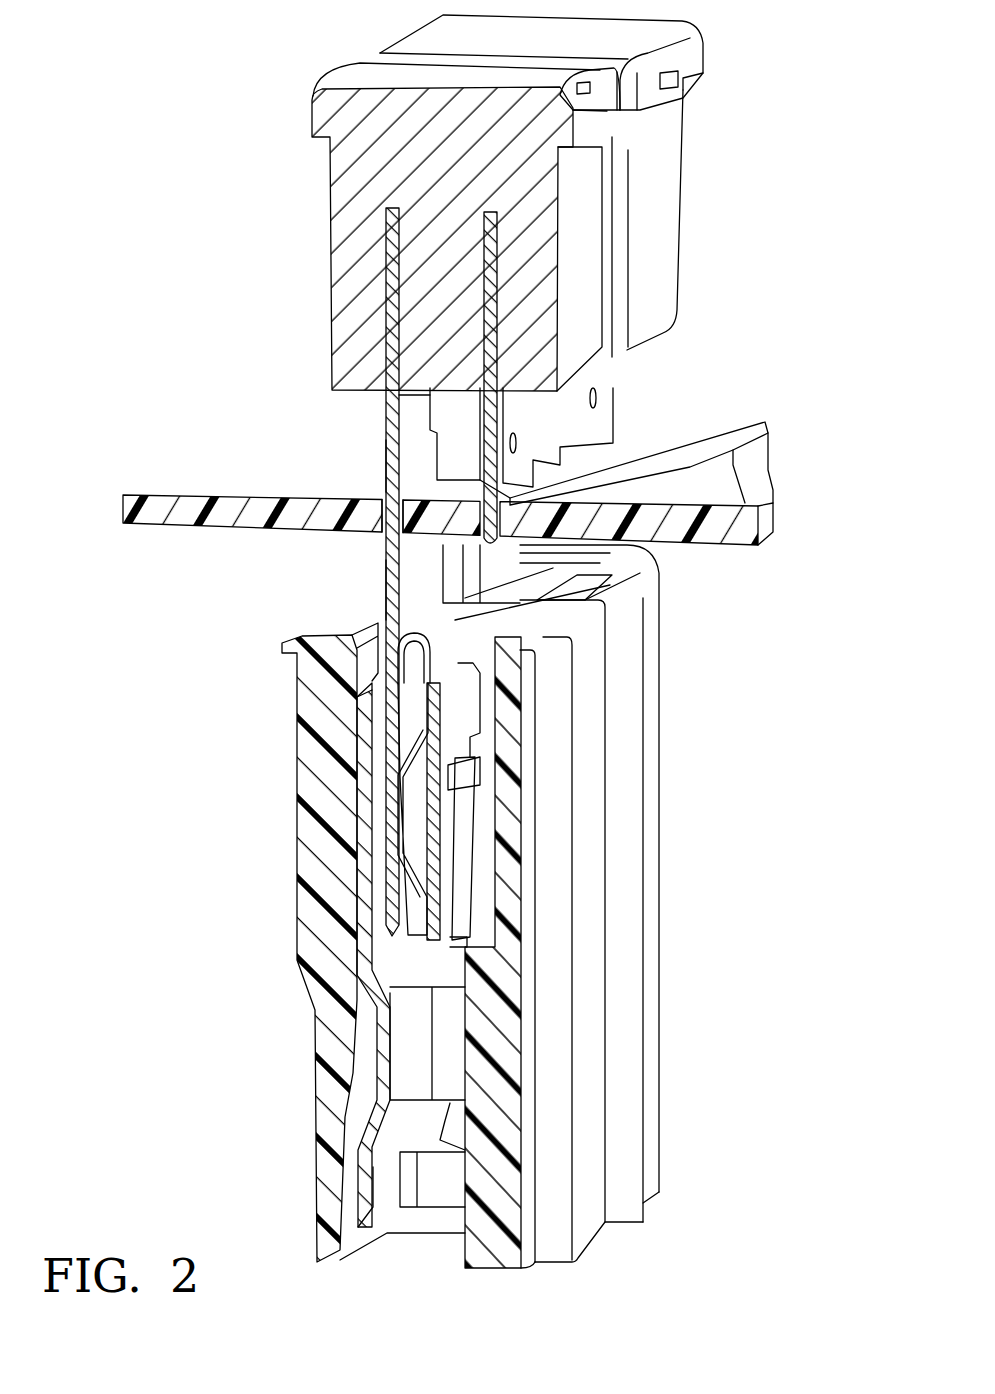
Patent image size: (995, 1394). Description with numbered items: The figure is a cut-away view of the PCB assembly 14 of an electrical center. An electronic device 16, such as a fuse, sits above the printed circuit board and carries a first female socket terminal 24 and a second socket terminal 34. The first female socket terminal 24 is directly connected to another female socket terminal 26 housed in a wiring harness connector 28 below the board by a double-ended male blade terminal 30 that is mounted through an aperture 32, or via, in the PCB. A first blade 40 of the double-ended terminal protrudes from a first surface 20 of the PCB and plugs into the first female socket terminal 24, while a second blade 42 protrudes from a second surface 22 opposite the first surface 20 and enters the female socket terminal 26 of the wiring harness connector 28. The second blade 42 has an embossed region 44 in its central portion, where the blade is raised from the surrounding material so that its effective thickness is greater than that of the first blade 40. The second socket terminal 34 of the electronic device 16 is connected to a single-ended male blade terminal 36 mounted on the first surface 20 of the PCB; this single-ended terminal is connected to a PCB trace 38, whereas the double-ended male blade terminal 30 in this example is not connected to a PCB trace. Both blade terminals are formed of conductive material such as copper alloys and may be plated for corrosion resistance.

The PCB assembly 14 is at (737, 535).
The electronic device 16 is at (362, 75).
The first surface 20 is at (745, 490).
The second surface 22 is at (686, 547).
The first female socket terminal 24 is at (390, 293).
The female socket terminal 26 is at (448, 720).
The wiring harness connector 28 is at (315, 1006).
The double-ended male blade terminal 30 is at (388, 467).
The aperture 32 is at (388, 517).
The second socket terminal 34 is at (493, 300).
The single-ended male blade terminal 36 is at (517, 410).
The PCB trace 38 is at (678, 470).
The first blade 40 is at (388, 403).
The second blade 42 is at (388, 588).
The embossed region 44 is at (423, 665).